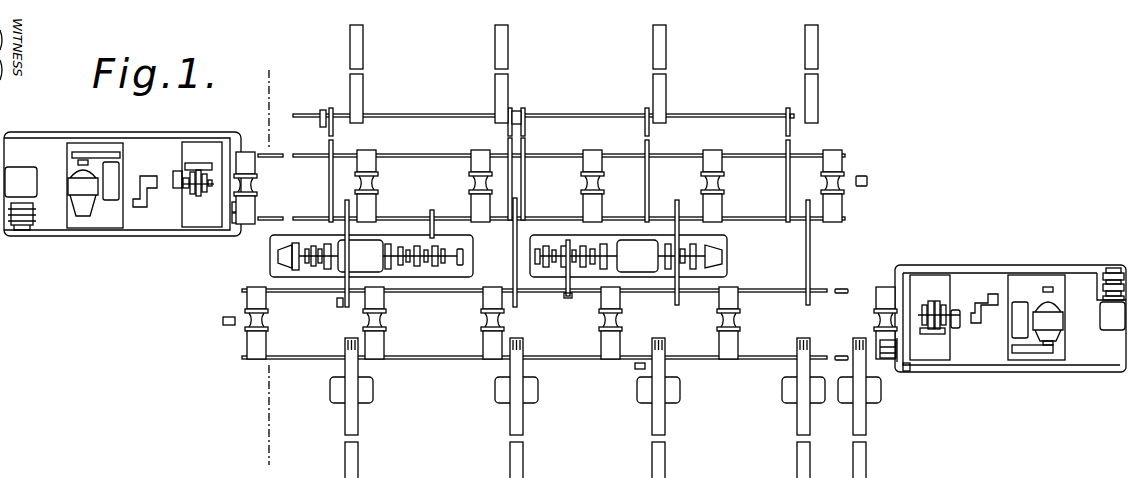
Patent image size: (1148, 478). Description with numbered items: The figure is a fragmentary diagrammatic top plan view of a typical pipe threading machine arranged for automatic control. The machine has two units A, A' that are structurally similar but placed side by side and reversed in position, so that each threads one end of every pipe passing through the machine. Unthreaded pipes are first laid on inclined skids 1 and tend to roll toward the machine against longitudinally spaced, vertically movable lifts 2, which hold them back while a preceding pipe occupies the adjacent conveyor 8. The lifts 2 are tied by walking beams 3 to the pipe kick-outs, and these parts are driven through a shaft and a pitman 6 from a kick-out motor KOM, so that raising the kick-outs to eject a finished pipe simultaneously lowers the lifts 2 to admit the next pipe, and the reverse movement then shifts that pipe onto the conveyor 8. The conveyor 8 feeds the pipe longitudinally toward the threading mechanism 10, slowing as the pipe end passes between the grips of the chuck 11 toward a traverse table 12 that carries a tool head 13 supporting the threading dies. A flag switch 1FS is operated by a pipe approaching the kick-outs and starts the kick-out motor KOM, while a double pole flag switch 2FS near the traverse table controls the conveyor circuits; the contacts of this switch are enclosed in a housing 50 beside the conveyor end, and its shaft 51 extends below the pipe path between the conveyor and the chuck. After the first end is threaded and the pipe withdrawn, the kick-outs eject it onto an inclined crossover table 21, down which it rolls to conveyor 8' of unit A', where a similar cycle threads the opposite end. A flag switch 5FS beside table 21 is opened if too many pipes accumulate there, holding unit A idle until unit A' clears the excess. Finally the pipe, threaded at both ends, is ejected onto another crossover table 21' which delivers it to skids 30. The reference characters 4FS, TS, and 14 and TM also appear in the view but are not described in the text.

The skids 1 is at (668, 458).
The pipe lifts 2 is at (269, 150).
The walking beams 3 is at (281, 469).
The skids 30 is at (808, 89).
The crossover table 21 is at (786, 252).
The crossover table 21' is at (767, 173).
The conveyor 8 is at (384, 323).
The conveyor 8' is at (379, 186).
The unit A is at (416, 275).
The unit A' is at (451, 186).
The kick-out motor KOM is at (696, 262).
The pitman 6 is at (567, 284).
The flag switch 5FS is at (336, 302).
The limit switch 4FS is at (228, 326).
The flag switch 1FS is at (633, 366).
The flag switch 2FS is at (908, 372).
The threading mechanism 10 is at (997, 383).
The chuck 11 is at (938, 308).
The terminal strip TS is at (924, 332).
The crank lever 14 is at (972, 310).
The traverse table 12 is at (1036, 317).
The tool head 13 is at (1012, 320).
The traction motor TM is at (1102, 288).
The shaft 51 is at (877, 331).
The housing 50 is at (891, 351).